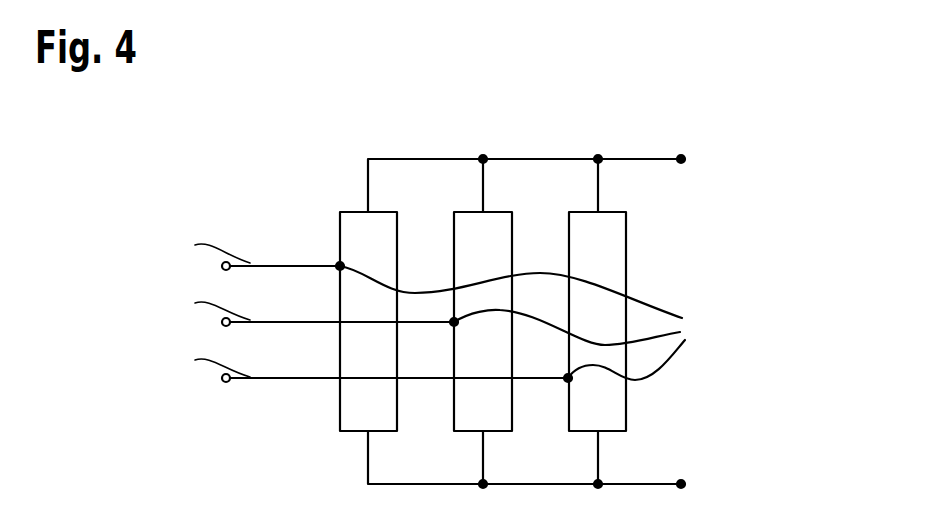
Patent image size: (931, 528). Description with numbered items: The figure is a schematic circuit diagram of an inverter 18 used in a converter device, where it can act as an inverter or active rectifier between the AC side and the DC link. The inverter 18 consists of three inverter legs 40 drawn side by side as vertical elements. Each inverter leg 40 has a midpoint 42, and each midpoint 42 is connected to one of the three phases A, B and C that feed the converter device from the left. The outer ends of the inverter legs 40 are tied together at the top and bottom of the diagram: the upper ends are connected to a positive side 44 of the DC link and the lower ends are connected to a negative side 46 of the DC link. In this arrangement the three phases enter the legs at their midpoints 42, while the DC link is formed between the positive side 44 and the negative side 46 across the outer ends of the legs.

The inverter or active rectifier 18 is at (784, 242).
The inverter legs 40 is at (398, 252).
The midpoint 42 is at (527, 323).
The positive side 44 is at (684, 159).
The negative side 46 is at (684, 484).